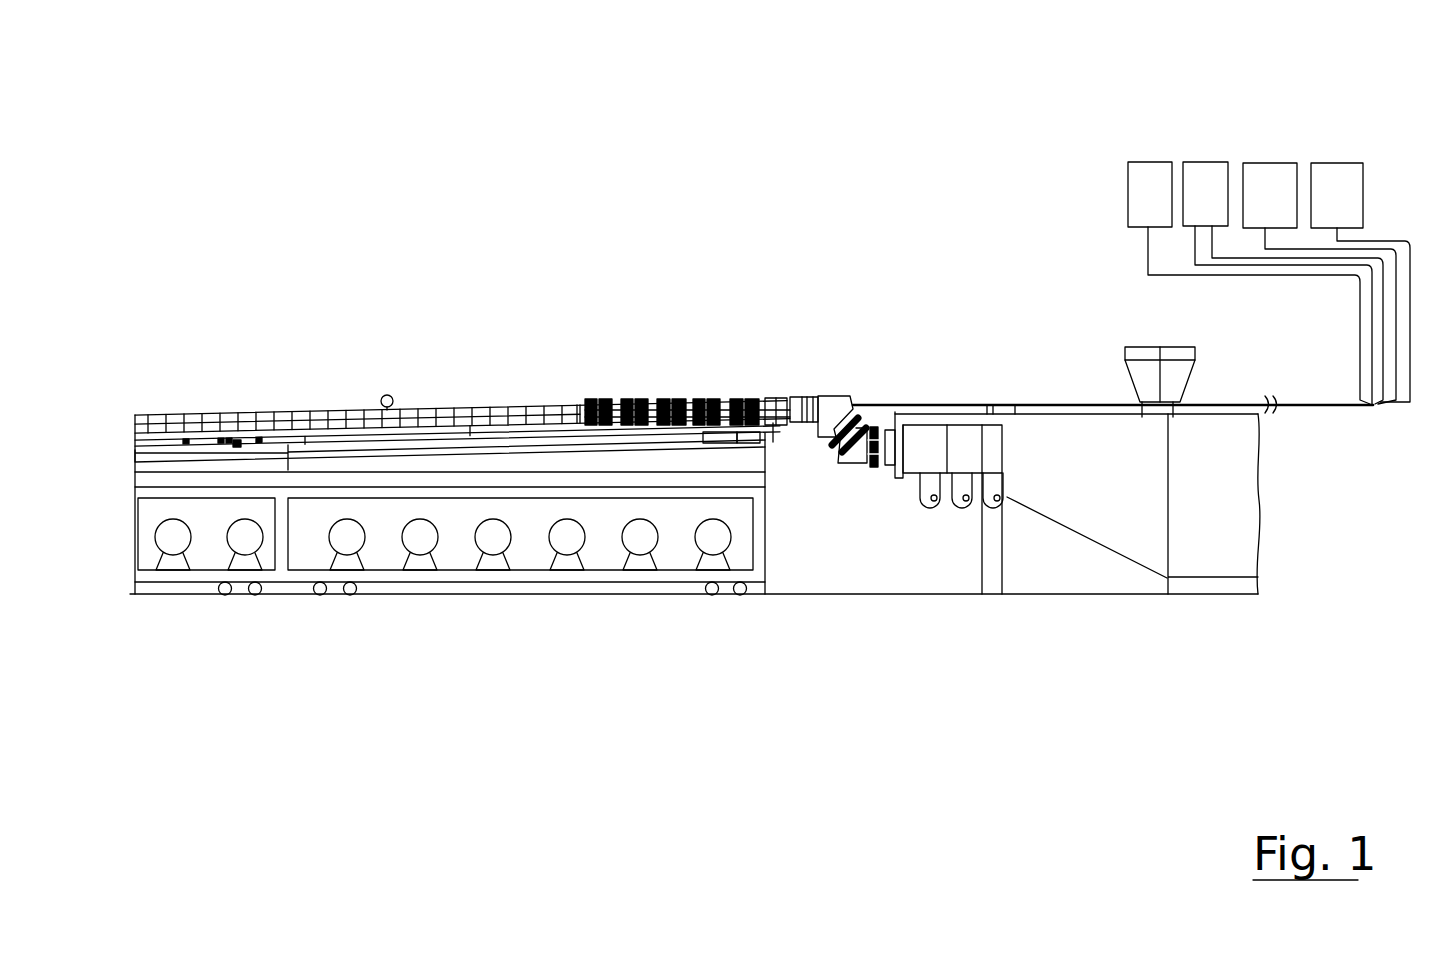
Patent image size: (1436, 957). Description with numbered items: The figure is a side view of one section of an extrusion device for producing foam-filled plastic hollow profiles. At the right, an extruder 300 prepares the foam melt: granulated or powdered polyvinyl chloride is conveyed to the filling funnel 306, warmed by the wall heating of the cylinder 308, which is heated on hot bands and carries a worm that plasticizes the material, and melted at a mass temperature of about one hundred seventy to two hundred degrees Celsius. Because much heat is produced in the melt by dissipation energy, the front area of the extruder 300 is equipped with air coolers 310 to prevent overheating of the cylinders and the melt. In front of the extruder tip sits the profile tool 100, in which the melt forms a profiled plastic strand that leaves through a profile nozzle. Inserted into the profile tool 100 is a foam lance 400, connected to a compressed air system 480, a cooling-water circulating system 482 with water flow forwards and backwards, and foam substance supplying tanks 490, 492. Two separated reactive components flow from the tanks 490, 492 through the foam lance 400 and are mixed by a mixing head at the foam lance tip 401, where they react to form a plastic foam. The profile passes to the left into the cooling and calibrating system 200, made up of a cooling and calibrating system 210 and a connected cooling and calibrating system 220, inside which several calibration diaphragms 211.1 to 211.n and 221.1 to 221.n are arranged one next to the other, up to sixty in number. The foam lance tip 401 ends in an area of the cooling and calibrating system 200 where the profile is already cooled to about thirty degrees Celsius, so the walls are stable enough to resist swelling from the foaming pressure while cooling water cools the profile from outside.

The profile tool 100 is at (835, 408).
The cooling and calibrating system 200 is at (450, 537).
The cooling and calibrating system 210 is at (782, 98).
The calibration diaphragm 211.1 is at (778, 397).
The calibration diaphragm 211.n is at (603, 400).
The cooling and calibrating system 220 is at (605, 95).
The calibration diaphragm 221.1 is at (577, 400).
The calibration diaphragm 221.n is at (148, 428).
The extruder 300 is at (1088, 485).
The filling funnel 306 is at (1140, 355).
The cylinder 308 is at (927, 435).
The air coolers 310 is at (925, 513).
The foam lance 400 is at (1310, 402).
The foam lance tip 401 is at (237, 440).
The compressed air system 480 is at (1146, 175).
The cooling-water circulating system 482 is at (1203, 180).
The foam substance supplying tank 490 is at (1266, 180).
The foam substance supplying tank 492 is at (1333, 183).